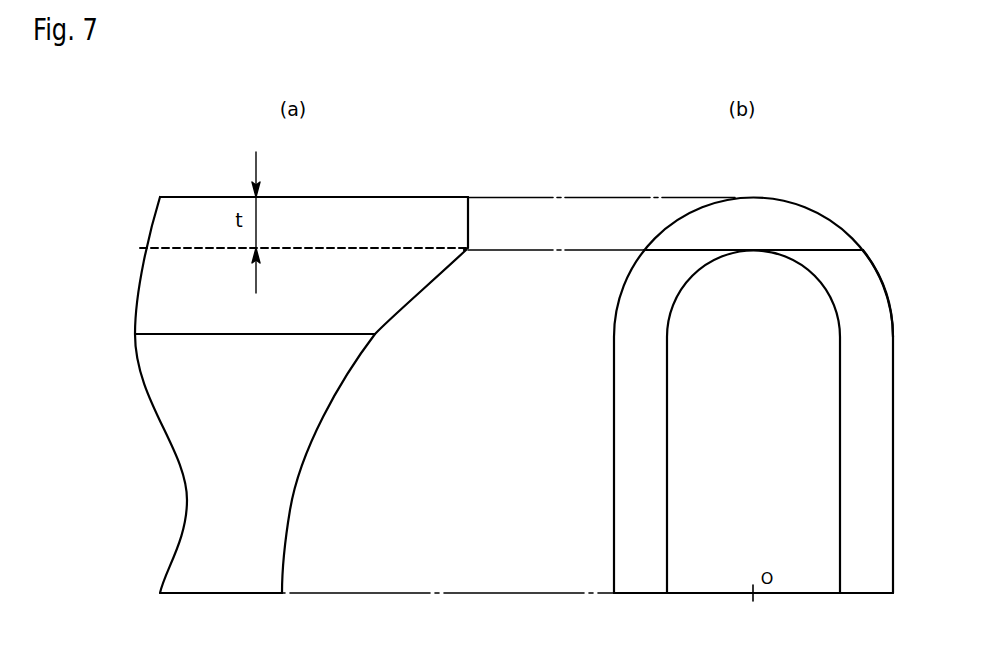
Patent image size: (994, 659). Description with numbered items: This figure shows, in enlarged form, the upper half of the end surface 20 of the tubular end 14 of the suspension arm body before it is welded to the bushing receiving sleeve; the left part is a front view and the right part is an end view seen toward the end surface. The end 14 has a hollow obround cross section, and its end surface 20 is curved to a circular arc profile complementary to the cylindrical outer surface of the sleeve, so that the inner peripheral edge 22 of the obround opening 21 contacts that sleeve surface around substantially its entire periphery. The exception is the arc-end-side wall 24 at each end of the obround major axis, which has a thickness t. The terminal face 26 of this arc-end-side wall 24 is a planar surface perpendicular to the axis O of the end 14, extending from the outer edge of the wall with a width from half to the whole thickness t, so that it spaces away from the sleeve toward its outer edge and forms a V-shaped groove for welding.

The end 14 is at (217, 557).
The end surface 20 is at (330, 400).
The opening 21 is at (852, 350).
The inner peripheral edge 22 is at (667, 398).
The arc-end-side wall 24 is at (402, 222).
The terminal face 26 is at (468, 218).